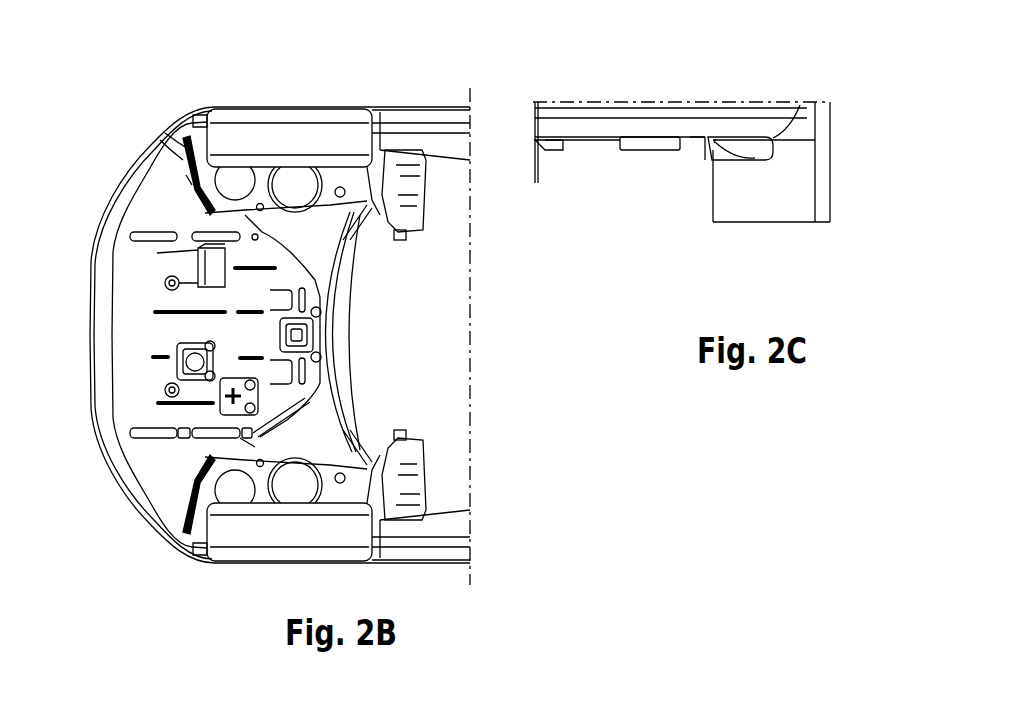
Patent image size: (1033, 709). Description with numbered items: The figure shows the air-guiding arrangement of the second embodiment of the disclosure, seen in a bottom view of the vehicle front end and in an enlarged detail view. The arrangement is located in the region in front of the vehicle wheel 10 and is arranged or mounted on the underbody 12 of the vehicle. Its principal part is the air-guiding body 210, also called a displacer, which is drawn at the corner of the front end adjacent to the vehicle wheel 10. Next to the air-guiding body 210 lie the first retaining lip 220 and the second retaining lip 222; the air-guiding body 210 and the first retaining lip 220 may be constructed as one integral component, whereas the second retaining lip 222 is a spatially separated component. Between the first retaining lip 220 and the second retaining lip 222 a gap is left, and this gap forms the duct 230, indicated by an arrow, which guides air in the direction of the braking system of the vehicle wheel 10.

In FIG. 2B, the vehicle wheel 10 is at (231, 136).
In FIG. 2B, the underbody 12 is at (152, 457).
In FIG. 2B, the air-guiding body 210 is at (177, 156).
In FIG. 2C, the air-guiding body 210 is at (750, 140).
In FIG. 2C, the first retaining lip 220 is at (706, 163).
In FIG. 2B, the second retaining lip 222 is at (180, 206).
In FIG. 2C, the second retaining lip 222 is at (640, 150).
In FIG. 2B, the duct 230 is at (172, 178).
In FIG. 2C, the duct 230 is at (693, 165).